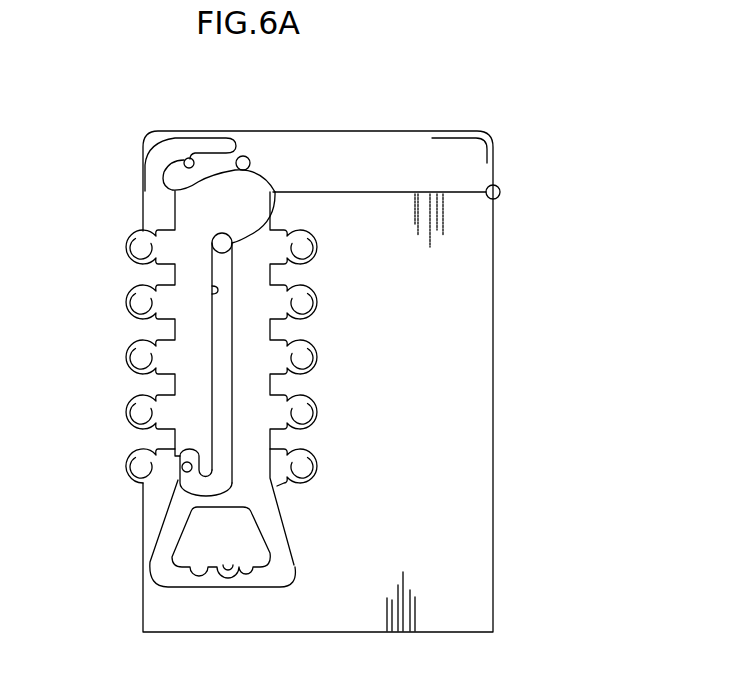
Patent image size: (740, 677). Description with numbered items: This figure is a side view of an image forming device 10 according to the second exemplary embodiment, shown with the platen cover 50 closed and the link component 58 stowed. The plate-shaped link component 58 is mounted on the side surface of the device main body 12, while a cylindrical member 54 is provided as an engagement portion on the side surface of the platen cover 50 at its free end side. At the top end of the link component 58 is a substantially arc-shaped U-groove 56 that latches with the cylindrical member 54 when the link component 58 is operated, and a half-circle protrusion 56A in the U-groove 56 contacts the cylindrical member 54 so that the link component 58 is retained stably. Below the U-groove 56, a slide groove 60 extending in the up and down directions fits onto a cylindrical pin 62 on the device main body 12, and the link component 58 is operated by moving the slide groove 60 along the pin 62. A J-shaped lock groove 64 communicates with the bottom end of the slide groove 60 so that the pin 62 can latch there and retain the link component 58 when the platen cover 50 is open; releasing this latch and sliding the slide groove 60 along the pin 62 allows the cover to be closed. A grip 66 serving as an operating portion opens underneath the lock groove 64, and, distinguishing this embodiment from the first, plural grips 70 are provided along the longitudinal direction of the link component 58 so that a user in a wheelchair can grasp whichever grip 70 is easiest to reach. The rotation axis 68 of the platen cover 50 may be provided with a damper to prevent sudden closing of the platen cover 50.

The clip assembly 10 is at (527, 77).
The device main body 12 is at (484, 364).
The platen cover 50 is at (403, 132).
The cylindrical member 54 is at (248, 157).
The U-groove 56 is at (207, 175).
The half-circle protrusion 56A is at (182, 141).
The link component 58 is at (247, 468).
The slide groove 60 is at (212, 297).
The pin 62 is at (233, 240).
The lock groove 64 is at (180, 474).
The grip 66 is at (232, 566).
The rotation axis 68 is at (501, 191).
The grips 70 is at (128, 458).